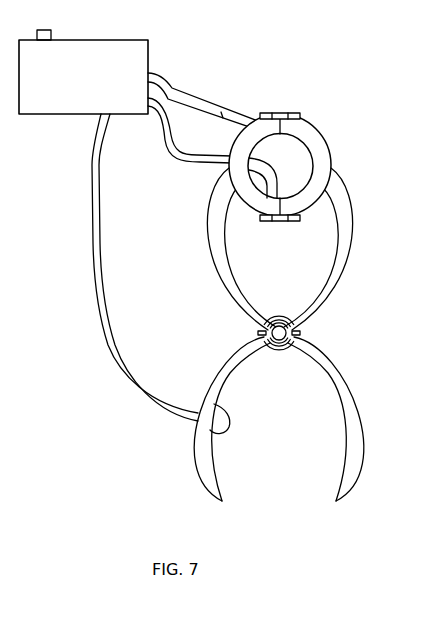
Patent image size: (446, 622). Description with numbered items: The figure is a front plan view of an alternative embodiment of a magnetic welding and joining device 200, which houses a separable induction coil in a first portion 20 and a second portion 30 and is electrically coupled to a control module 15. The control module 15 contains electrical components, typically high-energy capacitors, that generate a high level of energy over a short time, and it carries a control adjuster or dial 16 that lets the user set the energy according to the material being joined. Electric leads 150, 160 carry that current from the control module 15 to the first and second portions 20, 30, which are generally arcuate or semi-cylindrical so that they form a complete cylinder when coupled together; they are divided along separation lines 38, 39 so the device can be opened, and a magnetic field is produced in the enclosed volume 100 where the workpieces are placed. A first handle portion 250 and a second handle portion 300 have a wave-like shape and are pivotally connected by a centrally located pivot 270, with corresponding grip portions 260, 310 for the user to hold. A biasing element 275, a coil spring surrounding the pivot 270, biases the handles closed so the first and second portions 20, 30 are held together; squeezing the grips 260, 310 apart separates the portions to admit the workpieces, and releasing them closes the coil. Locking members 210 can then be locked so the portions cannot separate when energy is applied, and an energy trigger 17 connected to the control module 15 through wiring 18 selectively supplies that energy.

The control module 15 is at (90, 48).
The control adjuster or dial 16 is at (48, 30).
The energy trigger 17 is at (223, 422).
The wiring 18 is at (158, 397).
The first portion 20 is at (243, 149).
The second portion 30 is at (324, 157).
The separation line 38 is at (283, 130).
The separation line 39 is at (278, 204).
The volume 100 is at (286, 163).
The electric lead 150 is at (237, 120).
The electric lead 160 is at (270, 181).
The magnetic welding and joining device 200 is at (282, 152).
The locking member 210 is at (283, 113).
The first handle portion 250 is at (338, 257).
The grip portion 260 is at (208, 488).
The pivot 270 is at (280, 350).
The biasing element 275 is at (301, 334).
The second handle portion 300 is at (216, 258).
The grip portion 310 is at (357, 488).